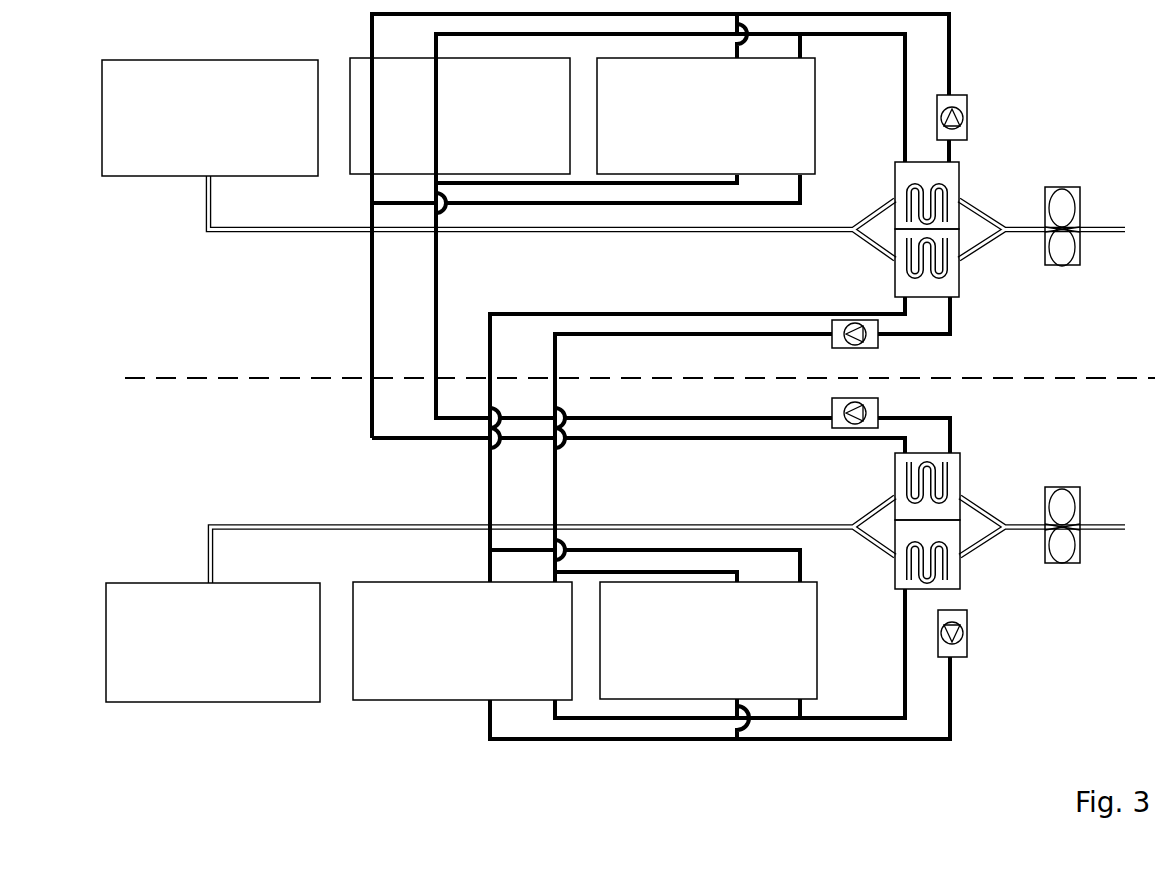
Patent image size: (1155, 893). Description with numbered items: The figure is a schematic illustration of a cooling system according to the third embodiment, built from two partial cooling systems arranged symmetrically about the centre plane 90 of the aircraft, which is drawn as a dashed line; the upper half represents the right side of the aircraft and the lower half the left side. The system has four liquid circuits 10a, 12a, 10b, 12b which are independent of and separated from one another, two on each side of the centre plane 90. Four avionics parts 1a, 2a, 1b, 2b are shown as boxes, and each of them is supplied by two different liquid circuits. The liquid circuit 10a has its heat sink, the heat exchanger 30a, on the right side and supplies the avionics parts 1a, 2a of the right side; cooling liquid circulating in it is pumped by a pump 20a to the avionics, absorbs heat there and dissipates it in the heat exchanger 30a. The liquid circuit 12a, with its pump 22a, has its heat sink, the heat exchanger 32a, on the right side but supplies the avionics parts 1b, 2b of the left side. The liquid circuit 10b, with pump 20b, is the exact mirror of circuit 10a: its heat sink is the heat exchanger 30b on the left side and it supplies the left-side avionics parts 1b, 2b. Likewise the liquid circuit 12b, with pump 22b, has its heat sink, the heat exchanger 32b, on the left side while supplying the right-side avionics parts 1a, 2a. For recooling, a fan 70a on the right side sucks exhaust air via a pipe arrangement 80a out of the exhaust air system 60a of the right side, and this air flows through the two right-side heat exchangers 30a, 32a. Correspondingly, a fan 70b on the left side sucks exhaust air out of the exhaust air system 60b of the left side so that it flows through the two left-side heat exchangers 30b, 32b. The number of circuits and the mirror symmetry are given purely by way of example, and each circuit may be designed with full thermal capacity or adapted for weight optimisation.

The avionics part 1a is at (350, 104).
The avionics part 2a is at (815, 143).
The avionics part 1b is at (403, 703).
The avionics part 2b is at (817, 660).
The first liquid cooling circuit 10a is at (963, 50).
The liquid circuit 10b is at (963, 710).
The liquid circuit 12a is at (965, 318).
The liquid circuit 12b is at (953, 433).
The pump 20a is at (968, 116).
The pump 20b is at (968, 634).
The pump 22a is at (832, 342).
The pump 22b is at (872, 400).
The first heat exchanger 30a is at (960, 170).
The heat exchanger 30b is at (960, 576).
The heat exchanger 32a is at (960, 283).
The heat exchanger 32b is at (960, 472).
The first exhaust air system 60a is at (143, 177).
The exhaust air system 60b is at (150, 583).
The first fan 70a is at (1062, 188).
The fan 70b is at (1062, 486).
The first pipe arrangement 80a is at (270, 232).
The centre plane 90 is at (207, 374).